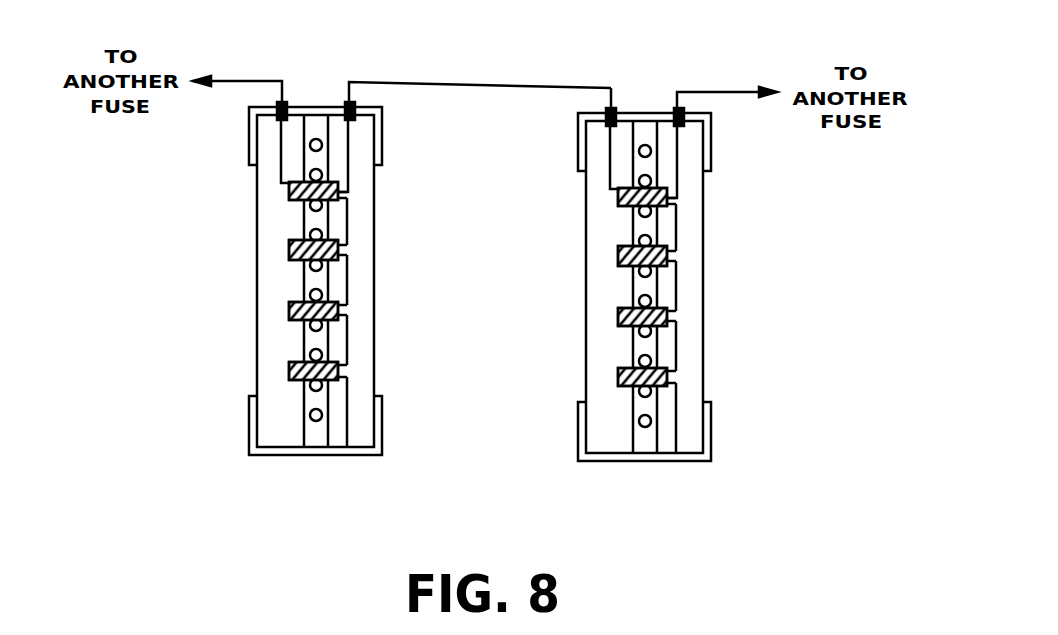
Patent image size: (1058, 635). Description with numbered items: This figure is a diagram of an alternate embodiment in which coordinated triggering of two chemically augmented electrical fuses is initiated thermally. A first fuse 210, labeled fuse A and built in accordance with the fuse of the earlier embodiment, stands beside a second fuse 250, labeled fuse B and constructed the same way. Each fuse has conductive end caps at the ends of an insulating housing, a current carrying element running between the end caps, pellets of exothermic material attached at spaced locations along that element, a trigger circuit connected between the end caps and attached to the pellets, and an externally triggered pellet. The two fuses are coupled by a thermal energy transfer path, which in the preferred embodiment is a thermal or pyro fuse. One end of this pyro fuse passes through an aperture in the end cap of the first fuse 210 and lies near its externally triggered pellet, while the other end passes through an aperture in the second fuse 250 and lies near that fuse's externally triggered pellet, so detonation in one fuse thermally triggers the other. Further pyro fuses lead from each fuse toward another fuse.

The first fuse 210 is at (377, 281).
The second fuse 250 is at (626, 289).